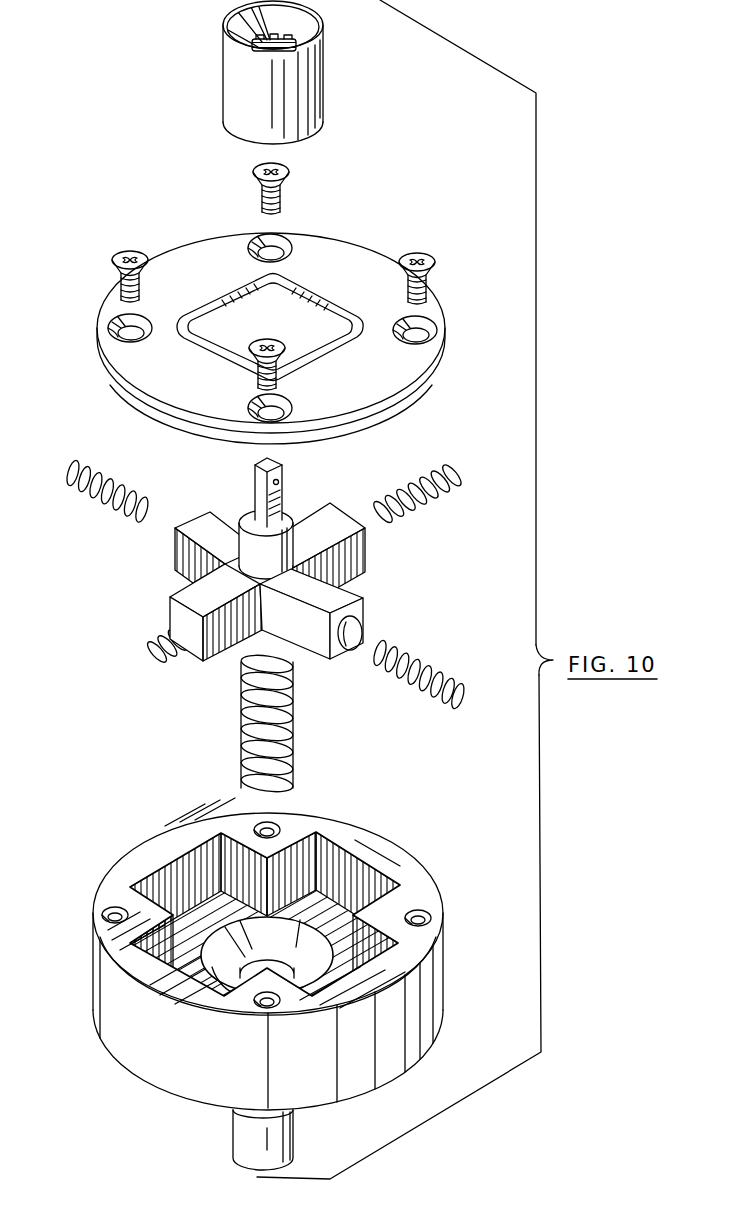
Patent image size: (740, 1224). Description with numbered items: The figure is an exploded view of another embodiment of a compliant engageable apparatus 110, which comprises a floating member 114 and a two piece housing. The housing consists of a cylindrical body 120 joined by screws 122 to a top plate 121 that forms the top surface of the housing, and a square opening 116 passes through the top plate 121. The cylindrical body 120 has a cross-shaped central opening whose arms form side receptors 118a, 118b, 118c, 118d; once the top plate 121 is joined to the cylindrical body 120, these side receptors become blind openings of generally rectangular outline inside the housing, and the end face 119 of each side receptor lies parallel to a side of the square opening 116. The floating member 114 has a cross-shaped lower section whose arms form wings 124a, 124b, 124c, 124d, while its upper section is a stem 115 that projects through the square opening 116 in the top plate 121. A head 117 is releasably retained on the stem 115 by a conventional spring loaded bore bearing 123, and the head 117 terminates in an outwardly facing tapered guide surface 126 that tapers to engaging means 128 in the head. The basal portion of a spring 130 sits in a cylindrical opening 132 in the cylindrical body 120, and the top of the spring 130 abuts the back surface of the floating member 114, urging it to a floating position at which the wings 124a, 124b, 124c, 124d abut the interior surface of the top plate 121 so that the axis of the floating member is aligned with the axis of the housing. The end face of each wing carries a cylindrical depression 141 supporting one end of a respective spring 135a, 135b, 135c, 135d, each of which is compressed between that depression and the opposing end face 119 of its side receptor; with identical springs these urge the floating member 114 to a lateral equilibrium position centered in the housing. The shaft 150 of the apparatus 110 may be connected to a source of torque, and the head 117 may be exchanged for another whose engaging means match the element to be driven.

The compliant engageable apparatus 110 is at (398, 209).
The floating member 114 is at (318, 653).
The stem 115 is at (253, 483).
The square opening 116 is at (232, 325).
The head 117 is at (267, 72).
The side receptor 118a is at (180, 955).
The side receptor 118b is at (436, 953).
The side receptor 118c is at (345, 863).
The side receptor 118d is at (172, 877).
The end face 119 is at (327, 862).
The cylindrical body 120 is at (105, 1000).
The top plate 121 is at (347, 263).
The screws 122 is at (290, 172).
The spring loaded bore bearing 123 is at (279, 481).
The wing 124a is at (180, 603).
The wing 124b is at (350, 607).
The wing 124c is at (343, 520).
The wing 124d is at (210, 528).
The tapered guide surface 126 is at (307, 30).
The engaging means 128 is at (232, 28).
The spring 130 is at (291, 752).
The cylindrical opening 132 is at (278, 970).
The spring 135a is at (177, 655).
The spring 135b is at (450, 680).
The spring 135c is at (452, 492).
The spring 135d is at (135, 492).
The cylindrical depression 141 is at (360, 632).
The shaft 150 is at (294, 1133).